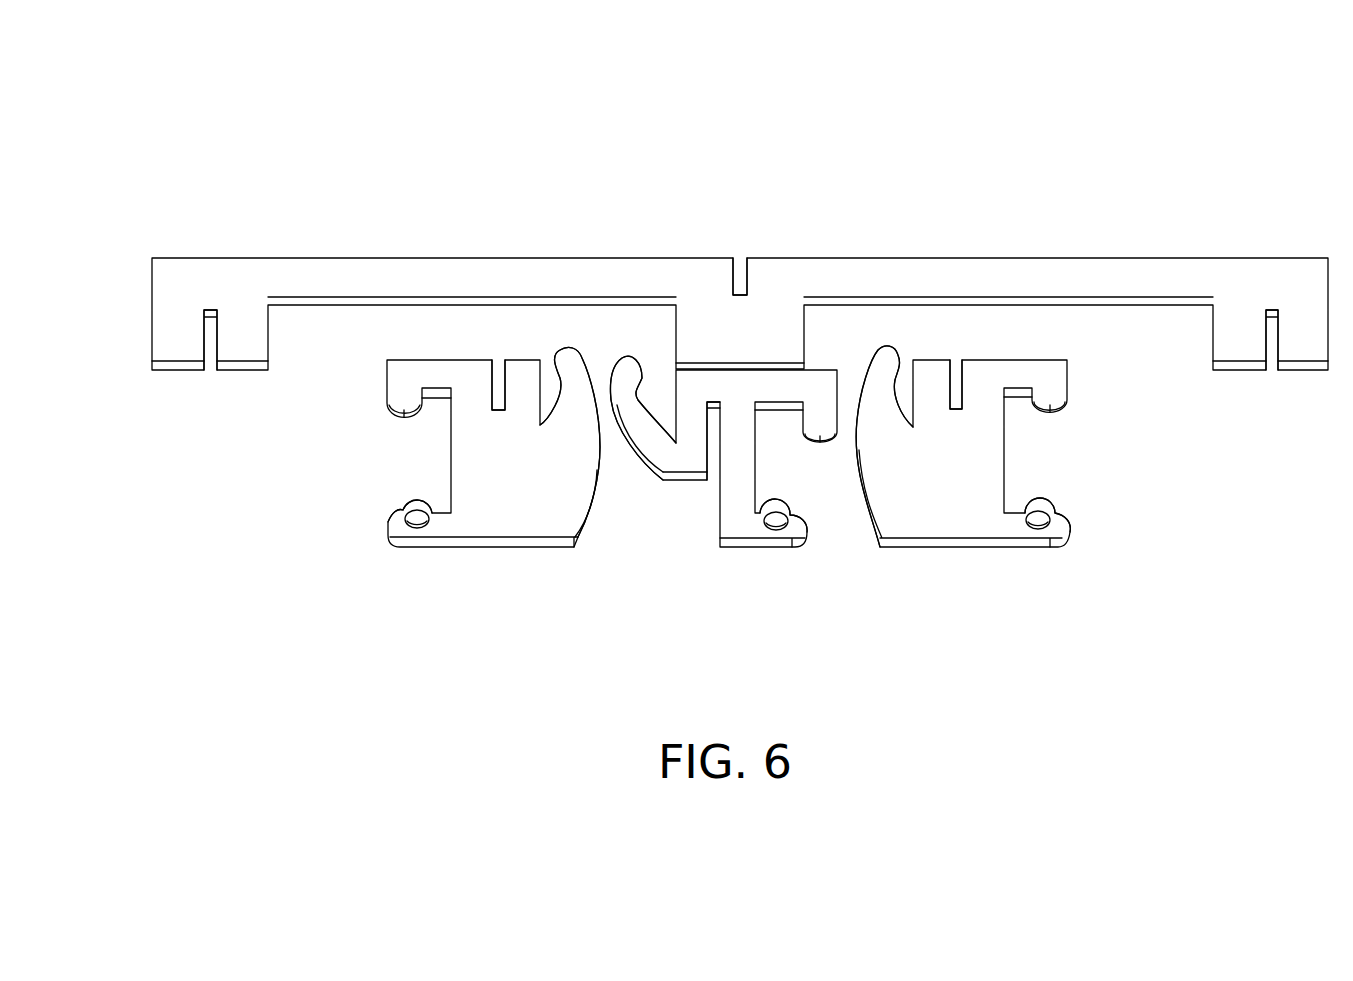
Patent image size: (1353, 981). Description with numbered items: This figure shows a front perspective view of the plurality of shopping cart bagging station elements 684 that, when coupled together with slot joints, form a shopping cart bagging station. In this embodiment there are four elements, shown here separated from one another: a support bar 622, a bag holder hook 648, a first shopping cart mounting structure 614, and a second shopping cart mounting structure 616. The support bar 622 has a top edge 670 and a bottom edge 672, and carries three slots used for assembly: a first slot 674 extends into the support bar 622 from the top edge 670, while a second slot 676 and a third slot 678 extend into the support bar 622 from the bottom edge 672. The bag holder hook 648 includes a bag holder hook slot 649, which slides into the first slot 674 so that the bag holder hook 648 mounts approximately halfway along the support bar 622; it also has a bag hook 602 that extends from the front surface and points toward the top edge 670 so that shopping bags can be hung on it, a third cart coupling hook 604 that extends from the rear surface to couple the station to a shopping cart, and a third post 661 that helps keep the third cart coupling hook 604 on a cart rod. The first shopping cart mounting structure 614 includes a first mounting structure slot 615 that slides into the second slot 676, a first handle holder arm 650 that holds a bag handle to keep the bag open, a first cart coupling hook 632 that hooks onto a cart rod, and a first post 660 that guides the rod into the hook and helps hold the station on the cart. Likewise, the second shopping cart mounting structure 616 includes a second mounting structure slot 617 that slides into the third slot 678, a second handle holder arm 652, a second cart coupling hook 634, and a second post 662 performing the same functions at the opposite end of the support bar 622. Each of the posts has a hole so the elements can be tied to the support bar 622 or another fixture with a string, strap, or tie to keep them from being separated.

The plurality of shopping cart bagging station elements 684 is at (628, 118).
The top edge 670 is at (383, 257).
The support bar 622 is at (1113, 268).
The bottom edge 672 is at (317, 305).
The first slot 674 is at (739, 250).
The second slot 676 is at (209, 380).
The third slot 678 is at (1270, 380).
The first shopping cart mounting structure 614 is at (570, 512).
The first mounting structure slot 615 is at (498, 352).
The first handle holder arm 650 is at (570, 352).
The first cart coupling hook 632 is at (402, 398).
The first post 660 is at (397, 530).
The bag holder hook 648 is at (693, 462).
The bag hook 602 is at (638, 430).
The bag holder hook slot 649 is at (712, 495).
The third cart coupling hook 604 is at (823, 433).
The third post 661 is at (800, 533).
The second shopping cart mounting structure 616 is at (890, 485).
The second handle holder arm 652 is at (885, 352).
The second mounting structure slot 617 is at (956, 351).
The second cart coupling hook 634 is at (1053, 386).
The second post 662 is at (1058, 533).